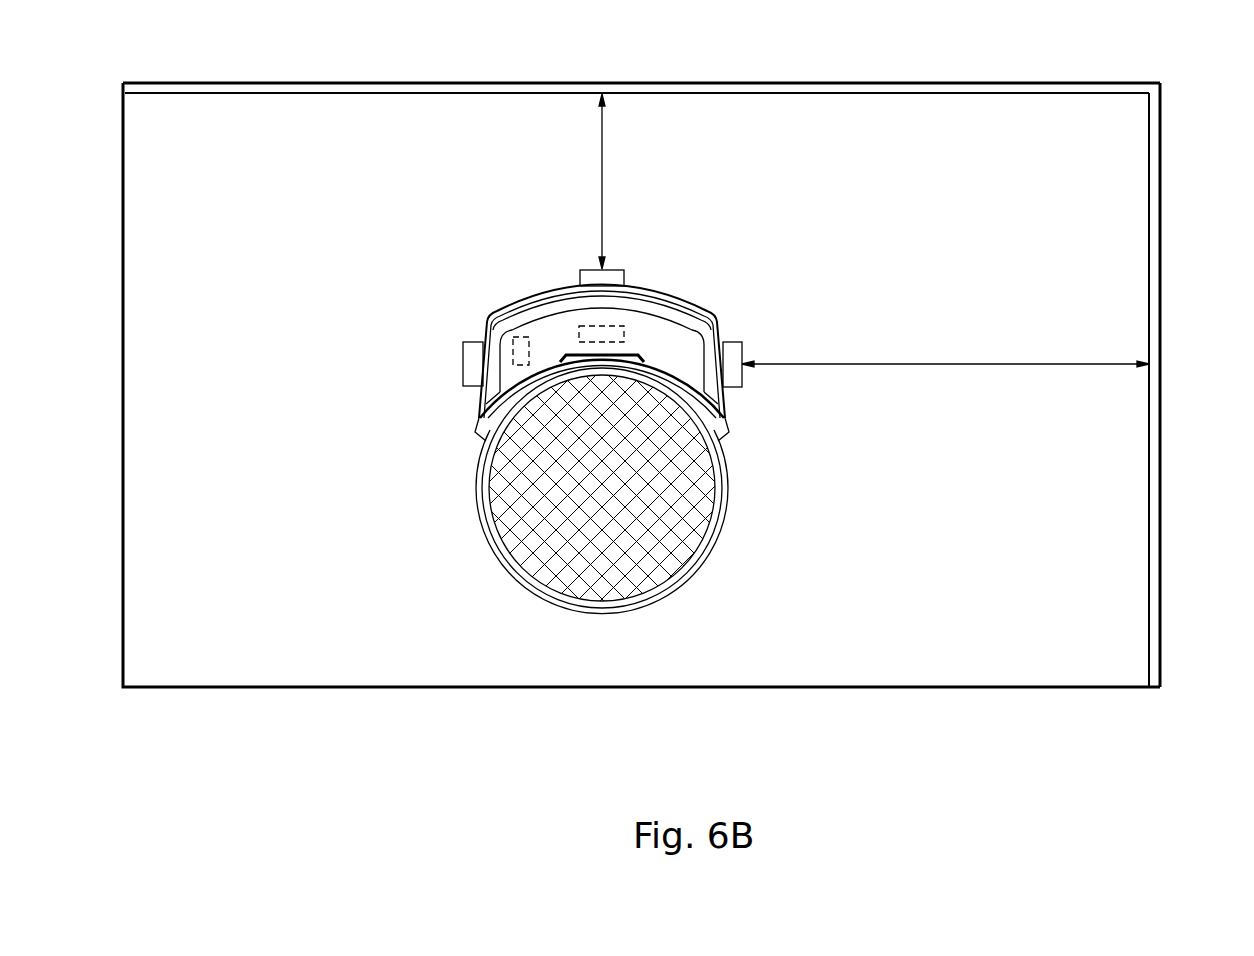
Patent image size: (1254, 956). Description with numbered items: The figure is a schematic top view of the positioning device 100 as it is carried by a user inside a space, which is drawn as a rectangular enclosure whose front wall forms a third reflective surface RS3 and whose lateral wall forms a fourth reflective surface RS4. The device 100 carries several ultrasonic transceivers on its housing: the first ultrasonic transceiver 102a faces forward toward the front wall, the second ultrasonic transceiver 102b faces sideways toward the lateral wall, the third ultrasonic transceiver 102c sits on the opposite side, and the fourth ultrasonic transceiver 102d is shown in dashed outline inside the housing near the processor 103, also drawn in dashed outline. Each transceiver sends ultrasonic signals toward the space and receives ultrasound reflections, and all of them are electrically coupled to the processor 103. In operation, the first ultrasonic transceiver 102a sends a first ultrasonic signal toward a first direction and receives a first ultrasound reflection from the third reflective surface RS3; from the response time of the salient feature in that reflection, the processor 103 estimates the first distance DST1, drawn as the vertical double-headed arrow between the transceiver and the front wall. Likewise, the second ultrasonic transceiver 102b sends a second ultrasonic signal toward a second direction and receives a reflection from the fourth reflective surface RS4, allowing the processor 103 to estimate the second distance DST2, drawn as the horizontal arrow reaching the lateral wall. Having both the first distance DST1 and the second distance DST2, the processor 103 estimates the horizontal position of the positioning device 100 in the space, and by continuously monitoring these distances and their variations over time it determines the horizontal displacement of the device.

The third reflective surface RS3 is at (700, 89).
The fourth reflective surface RS4 is at (1156, 240).
The first distance DST1 is at (604, 157).
The second distance DST2 is at (935, 361).
The positioning device 100 is at (738, 535).
The first ultrasonic transceiver 102a is at (625, 278).
The second ultrasonic transceiver 102b is at (743, 350).
The third ultrasonic transceiver 102c is at (461, 351).
The fourth ultrasonic transceiver 102d is at (624, 340).
The processor 103 is at (515, 337).